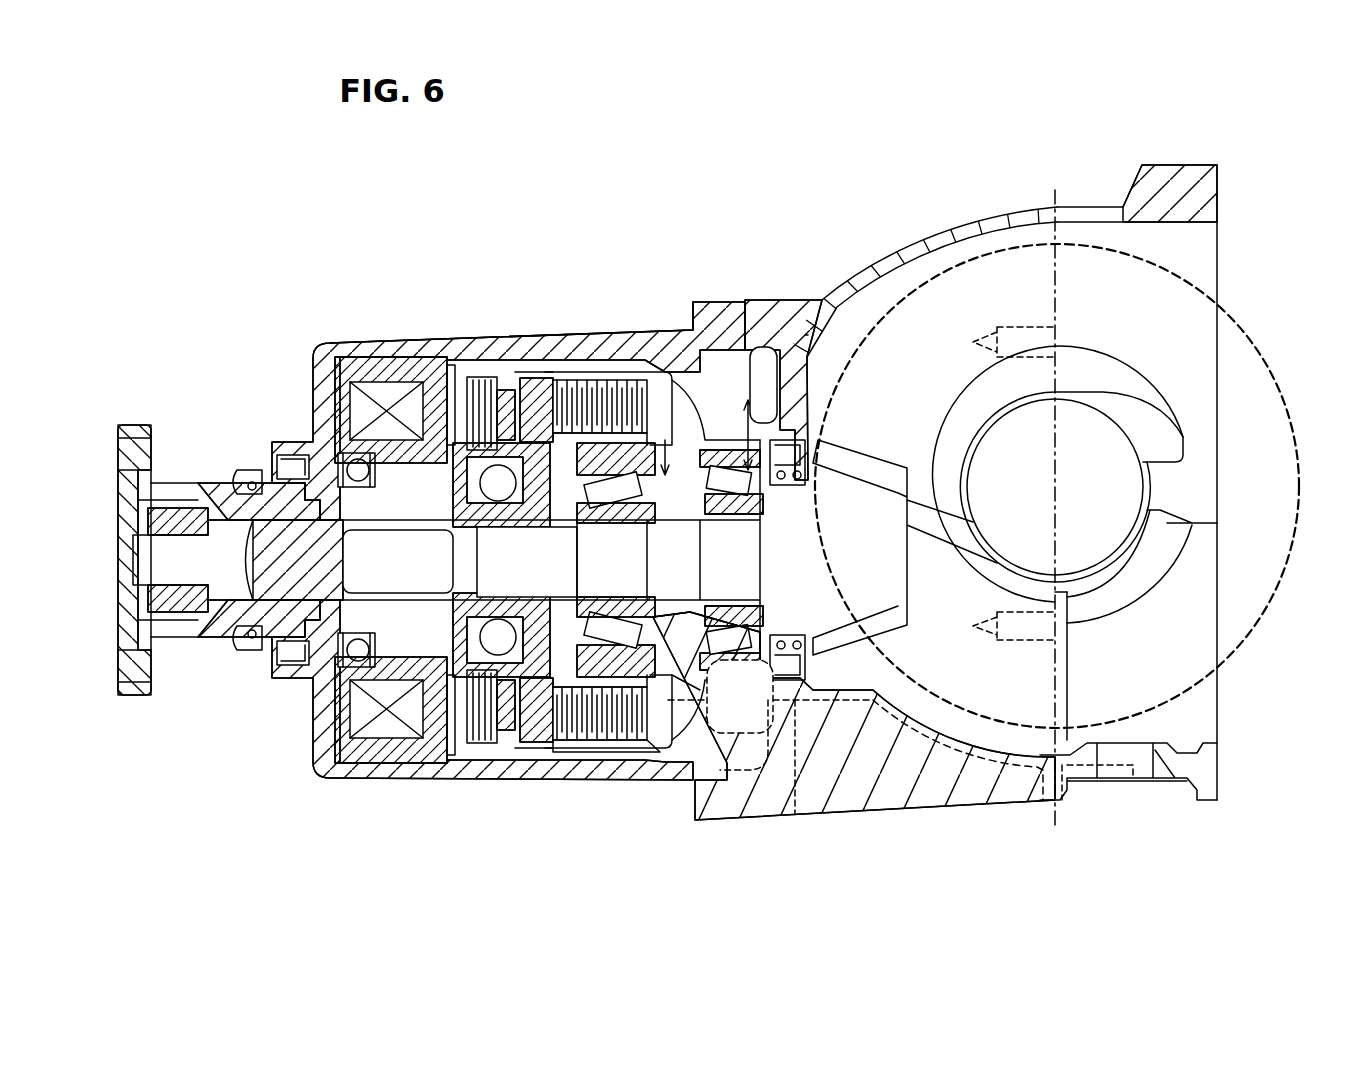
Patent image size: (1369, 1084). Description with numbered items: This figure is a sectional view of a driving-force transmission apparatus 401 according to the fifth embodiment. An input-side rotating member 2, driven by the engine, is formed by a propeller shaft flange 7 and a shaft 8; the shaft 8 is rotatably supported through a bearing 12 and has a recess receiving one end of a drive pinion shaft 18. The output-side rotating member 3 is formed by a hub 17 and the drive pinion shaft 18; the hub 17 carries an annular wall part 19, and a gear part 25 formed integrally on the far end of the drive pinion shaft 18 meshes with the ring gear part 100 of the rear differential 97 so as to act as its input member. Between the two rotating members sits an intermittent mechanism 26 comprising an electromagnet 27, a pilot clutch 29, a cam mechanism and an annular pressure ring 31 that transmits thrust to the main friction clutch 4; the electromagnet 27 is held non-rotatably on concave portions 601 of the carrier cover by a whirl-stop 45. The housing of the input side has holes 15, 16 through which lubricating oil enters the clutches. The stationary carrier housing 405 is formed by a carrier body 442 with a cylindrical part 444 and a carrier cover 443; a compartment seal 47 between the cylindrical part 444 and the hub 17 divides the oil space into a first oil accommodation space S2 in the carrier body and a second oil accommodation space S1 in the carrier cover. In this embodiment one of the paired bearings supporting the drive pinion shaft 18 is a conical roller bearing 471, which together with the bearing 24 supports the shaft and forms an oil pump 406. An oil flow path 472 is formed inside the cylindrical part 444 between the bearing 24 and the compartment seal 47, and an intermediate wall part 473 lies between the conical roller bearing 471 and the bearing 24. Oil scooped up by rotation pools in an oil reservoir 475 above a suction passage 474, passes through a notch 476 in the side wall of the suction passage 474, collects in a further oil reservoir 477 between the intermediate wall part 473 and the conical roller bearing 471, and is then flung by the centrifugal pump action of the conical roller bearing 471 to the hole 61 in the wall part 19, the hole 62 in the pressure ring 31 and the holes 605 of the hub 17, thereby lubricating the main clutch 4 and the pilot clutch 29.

The input-side rotating member 2 is at (205, 480).
The output-side rotating member 3 is at (433, 625).
The main clutch 4 is at (580, 372).
The propeller shaft flange 7 is at (186, 640).
The shaft 8 is at (286, 576).
The bearing 12 is at (366, 490).
The hole 15 is at (482, 748).
The hole 16 is at (584, 745).
The hub 17 is at (512, 612).
The drive pinion shaft 18 is at (508, 559).
The annular wall part 19 is at (552, 612).
The taper roller bearing 24 is at (722, 512).
The gear part 25 is at (893, 476).
The intermittent mechanism 26 is at (570, 762).
The electromagnet 27 is at (400, 343).
The pilot clutch 29 is at (478, 372).
The pressure ring 31 is at (545, 372).
The whirl-stop 45 is at (356, 343).
The compartment seal 47 is at (788, 488).
The hole 61 is at (548, 378).
The hole 62 is at (508, 378).
The rear differential 97 is at (985, 207).
The ring gear part 100 is at (1262, 330).
The driving-force transmission apparatus 401 is at (673, 186).
The housing wall 405 is at (745, 300).
The oil pump 406 is at (688, 655).
The carrier body 442 is at (788, 318).
The cavity 443 is at (752, 350).
The cylindrical part 444 is at (708, 790).
The conical roller bearing 471 is at (595, 505).
The oil flow path 472 is at (800, 428).
The intermediate wall part 473 is at (716, 616).
The suction passage 474 is at (676, 512).
The oil reservoir 475 is at (662, 395).
The notch 476 is at (612, 617).
The oil reservoir 477 is at (673, 712).
The concave portion 601 is at (428, 360).
The holes 605 is at (602, 382).
The second oil accommodation space S1 is at (742, 345).
The first oil accommodation space S2 is at (858, 298).